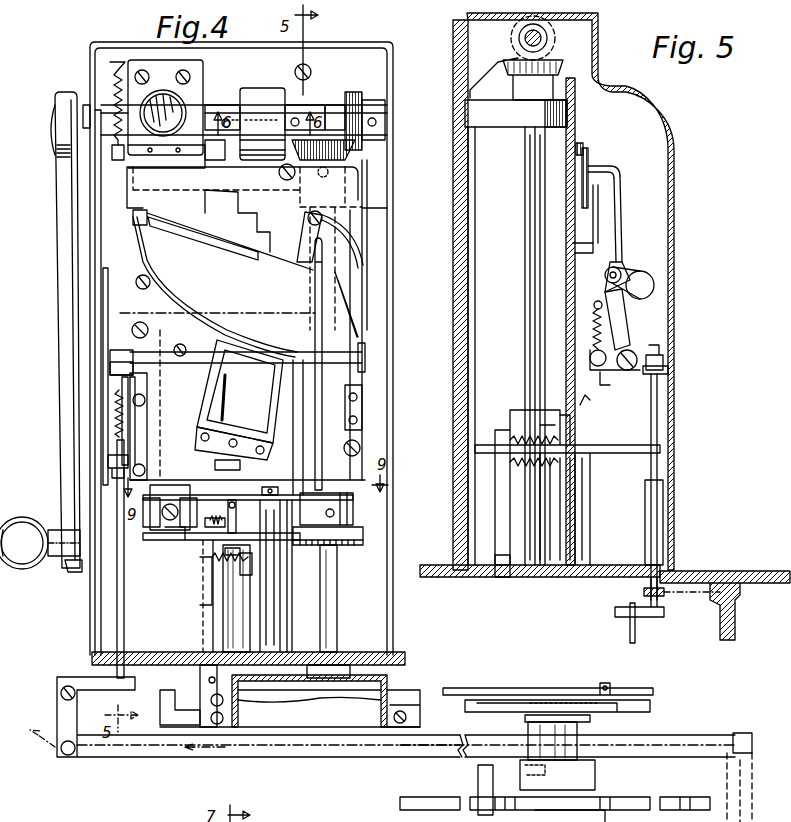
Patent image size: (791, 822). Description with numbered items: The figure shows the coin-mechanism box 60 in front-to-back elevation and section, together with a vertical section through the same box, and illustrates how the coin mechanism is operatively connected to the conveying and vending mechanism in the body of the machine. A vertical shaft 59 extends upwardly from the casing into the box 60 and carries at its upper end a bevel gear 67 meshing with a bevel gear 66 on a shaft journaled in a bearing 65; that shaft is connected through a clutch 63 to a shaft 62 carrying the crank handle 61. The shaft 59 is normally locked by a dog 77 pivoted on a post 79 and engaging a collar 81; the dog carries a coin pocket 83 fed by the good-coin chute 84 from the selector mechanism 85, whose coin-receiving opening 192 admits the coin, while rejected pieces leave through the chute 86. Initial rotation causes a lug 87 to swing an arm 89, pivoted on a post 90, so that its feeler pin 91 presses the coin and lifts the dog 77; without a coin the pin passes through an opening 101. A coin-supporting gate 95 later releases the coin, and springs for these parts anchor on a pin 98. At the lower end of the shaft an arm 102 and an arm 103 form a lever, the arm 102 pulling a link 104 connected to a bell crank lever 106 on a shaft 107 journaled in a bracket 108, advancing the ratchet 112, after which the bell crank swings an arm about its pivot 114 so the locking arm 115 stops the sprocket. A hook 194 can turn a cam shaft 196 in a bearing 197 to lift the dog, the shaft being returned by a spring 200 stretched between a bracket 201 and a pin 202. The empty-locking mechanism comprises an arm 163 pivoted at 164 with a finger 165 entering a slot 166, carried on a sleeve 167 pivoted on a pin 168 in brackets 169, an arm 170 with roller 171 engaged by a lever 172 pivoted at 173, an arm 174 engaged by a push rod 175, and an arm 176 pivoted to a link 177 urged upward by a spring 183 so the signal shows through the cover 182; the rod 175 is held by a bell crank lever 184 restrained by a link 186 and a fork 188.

In FIG. 4, the vertical shaft 59 is at (338, 642).
In FIG. 4, the coin-mechanism box 60 is at (397, 606).
In FIG. 4, the crank handle 61 is at (62, 190).
In FIG. 4, the shaft 62 is at (90, 105).
In FIG. 4, the clutch 63 is at (268, 100).
In FIG. 4, the bearing 65 is at (335, 105).
In FIG. 4, the bevel gear 66 is at (378, 108).
In FIG. 4, the bevel gear 67 is at (358, 156).
In FIG. 4, the dog 77 is at (195, 540).
In FIG. 4, the post 79 is at (232, 645).
In FIG. 4, the collar 81 is at (365, 525).
In FIG. 4, the coin pocket 83 is at (150, 528).
In FIG. 4, the good-coin chute 84 is at (229, 405).
In FIG. 4, the selector mechanism 85 is at (223, 283).
In FIG. 5, the selector mechanism 85 is at (580, 150).
In FIG. 4, the chute 86 is at (311, 427).
In FIG. 4, the lug 87 is at (353, 505).
In FIG. 4, the arm 89 is at (230, 498).
In FIG. 4, the post 90 is at (282, 560).
In FIG. 5, the post 90 is at (592, 547).
In FIG. 4, the feeler pin 91 is at (170, 522).
In FIG. 4, the coin-supporting gate 95 is at (175, 545).
In FIG. 5, the pin 98 is at (503, 572).
In FIG. 4, the opening 101 is at (185, 475).
In FIG. 4, the arm 102 is at (372, 697).
In FIG. 4, the arm 103 is at (265, 697).
In FIG. 4, the link 104 is at (414, 710).
In FIG. 4, the bell crank lever 106 is at (500, 686).
In FIG. 4, the shaft 107 is at (570, 686).
In FIG. 4, the bracket 108 is at (525, 718).
In FIG. 4, the ratchet 112 is at (612, 800).
In FIG. 4, the pivot 114 is at (540, 732).
In FIG. 4, the locking arm 115 is at (478, 772).
In FIG. 4, the arm 163 is at (315, 302).
In FIG. 5, the arm 163 is at (620, 195).
In FIG. 5, the pivot 164 is at (618, 265).
In FIG. 5, the finger 165 is at (600, 172).
In FIG. 4, the slot 166 is at (305, 262).
In FIG. 5, the slot 166 is at (588, 165).
In FIG. 4, the sleeve 167 is at (200, 350).
In FIG. 4, the pin 168 is at (330, 352).
In FIG. 4, the brackets 169 is at (362, 405).
In FIG. 4, the arm 170 is at (130, 352).
In FIG. 5, the arm 170 is at (619, 275).
In FIG. 4, the roller 171 is at (125, 368).
In FIG. 5, the roller 171 is at (654, 285).
In FIG. 4, the lever 172 is at (118, 381).
In FIG. 5, the lever 172 is at (628, 312).
In FIG. 5, the pivot 173 is at (630, 352).
In FIG. 4, the arm 174 is at (108, 462).
In FIG. 5, the arm 174 is at (663, 368).
In FIG. 4, the push rod 175 is at (118, 632).
In FIG. 5, the push rod 175 is at (651, 490).
In FIG. 5, the arm 176 is at (602, 380).
In FIG. 4, the link 177 is at (103, 276).
In FIG. 5, the cover 182 is at (674, 508).
In FIG. 4, the spring 183 is at (113, 414).
In FIG. 5, the spring 183 is at (592, 330).
In FIG. 5, the bell crank lever 184 is at (644, 592).
In FIG. 4, the link 186 is at (100, 757).
In FIG. 4, the fork 188 is at (735, 735).
In FIG. 4, the coin-receiving opening 192 is at (178, 100).
In FIG. 4, the hook 194 is at (182, 700).
In FIG. 4, the cam shaft 196 is at (205, 625).
In FIG. 4, the bearing 197 is at (212, 612).
In FIG. 4, the spring 200 is at (230, 556).
In FIG. 4, the bracket 201 is at (255, 568).
In FIG. 4, the pin 202 is at (210, 560).